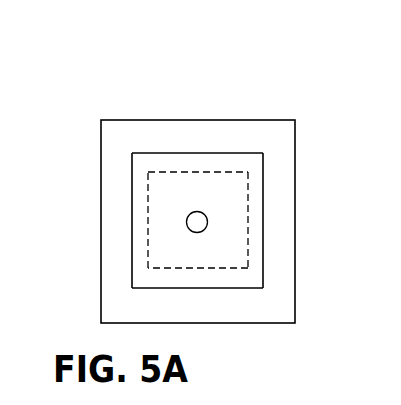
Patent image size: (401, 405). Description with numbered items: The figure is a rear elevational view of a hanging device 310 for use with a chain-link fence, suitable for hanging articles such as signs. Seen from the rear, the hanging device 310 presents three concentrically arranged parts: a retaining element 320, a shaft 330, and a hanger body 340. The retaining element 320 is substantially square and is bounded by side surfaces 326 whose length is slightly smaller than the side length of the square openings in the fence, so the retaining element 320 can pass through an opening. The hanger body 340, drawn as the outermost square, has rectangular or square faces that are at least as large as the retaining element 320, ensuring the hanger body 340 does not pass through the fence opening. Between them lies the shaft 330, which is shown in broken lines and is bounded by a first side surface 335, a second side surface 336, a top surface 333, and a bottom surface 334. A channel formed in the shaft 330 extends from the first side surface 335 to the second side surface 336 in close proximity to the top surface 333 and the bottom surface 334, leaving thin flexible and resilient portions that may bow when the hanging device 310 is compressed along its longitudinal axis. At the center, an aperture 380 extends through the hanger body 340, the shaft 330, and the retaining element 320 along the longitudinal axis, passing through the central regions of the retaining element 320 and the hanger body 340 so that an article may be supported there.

The hanging device 310 is at (76, 99).
The retaining element 320 is at (118, 163).
The side surfaces 326 is at (173, 153).
The shaft 330 is at (158, 155).
The top surface 333 is at (208, 170).
The bottom surface 334 is at (148, 268).
The first side surface 335 is at (147, 197).
The second side surface 336 is at (249, 190).
The hanger body 340 is at (265, 109).
The aperture 380 is at (208, 222).